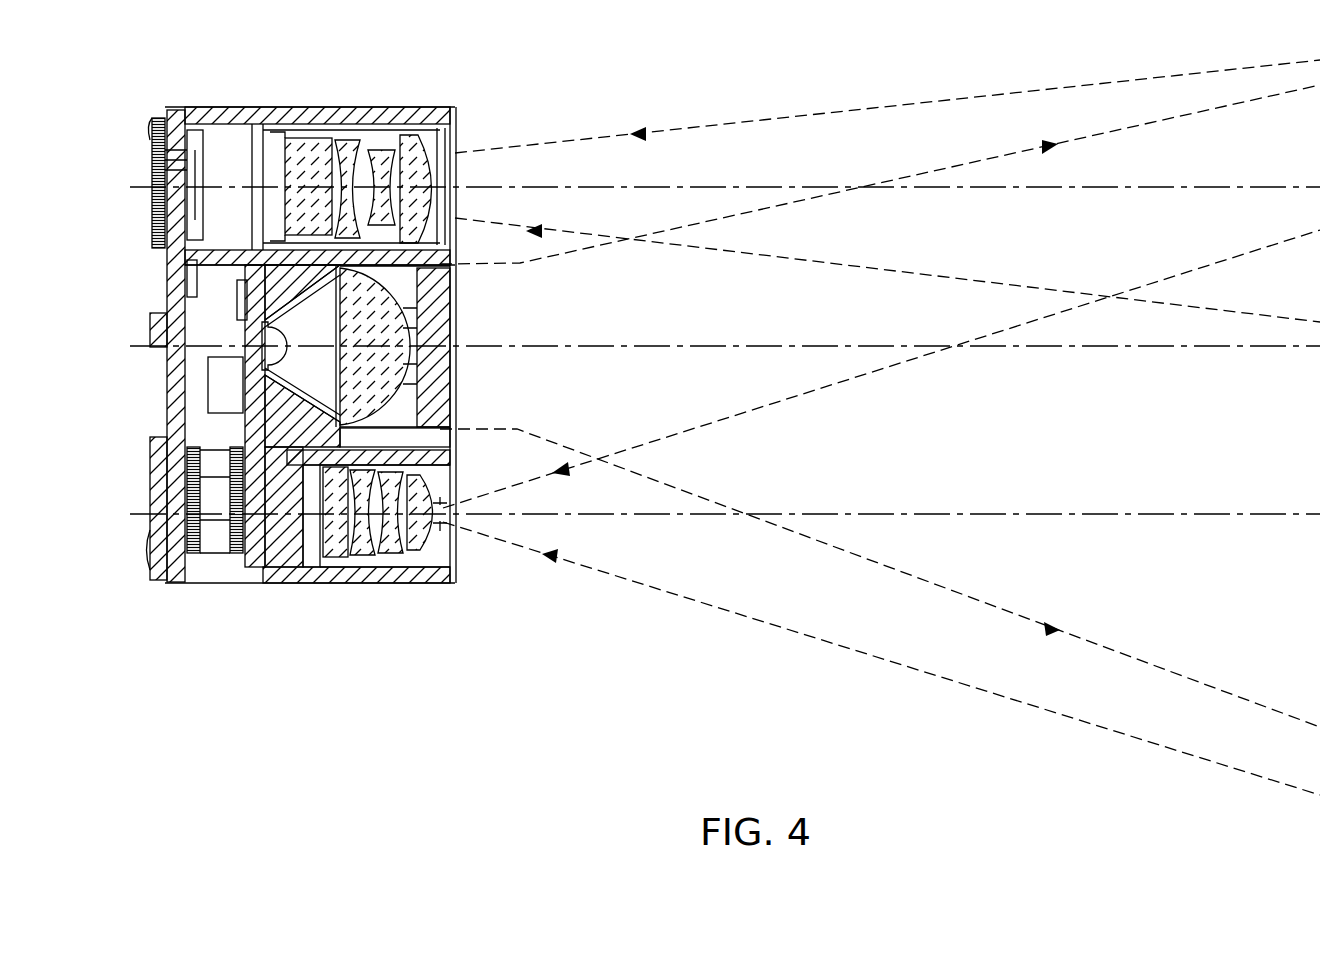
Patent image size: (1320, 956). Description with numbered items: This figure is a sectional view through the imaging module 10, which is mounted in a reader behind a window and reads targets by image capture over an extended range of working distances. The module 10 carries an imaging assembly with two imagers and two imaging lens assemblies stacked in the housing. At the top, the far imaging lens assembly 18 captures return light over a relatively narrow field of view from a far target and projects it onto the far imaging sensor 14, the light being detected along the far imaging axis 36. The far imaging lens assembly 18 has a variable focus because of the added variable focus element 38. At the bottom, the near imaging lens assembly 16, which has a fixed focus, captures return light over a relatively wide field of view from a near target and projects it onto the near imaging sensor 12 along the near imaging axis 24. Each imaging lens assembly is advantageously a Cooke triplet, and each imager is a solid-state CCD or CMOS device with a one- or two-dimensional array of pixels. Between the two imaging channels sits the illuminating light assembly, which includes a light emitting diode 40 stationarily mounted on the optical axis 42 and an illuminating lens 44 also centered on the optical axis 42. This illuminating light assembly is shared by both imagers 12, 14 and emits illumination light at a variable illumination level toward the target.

The imaging module 10 is at (172, 68).
The near imaging sensor 12 is at (243, 556).
The far imaging sensor 14 is at (222, 125).
The near imaging lens assembly 16 is at (327, 555).
The far imaging lens assembly 18 is at (355, 140).
The near imaging axis 24 is at (797, 510).
The far imaging axis 36 is at (710, 183).
The variable focus element 38 is at (315, 145).
The light emitting diode 40 is at (248, 343).
The optical axis 42 is at (710, 340).
The illuminating lens 44 is at (403, 356).